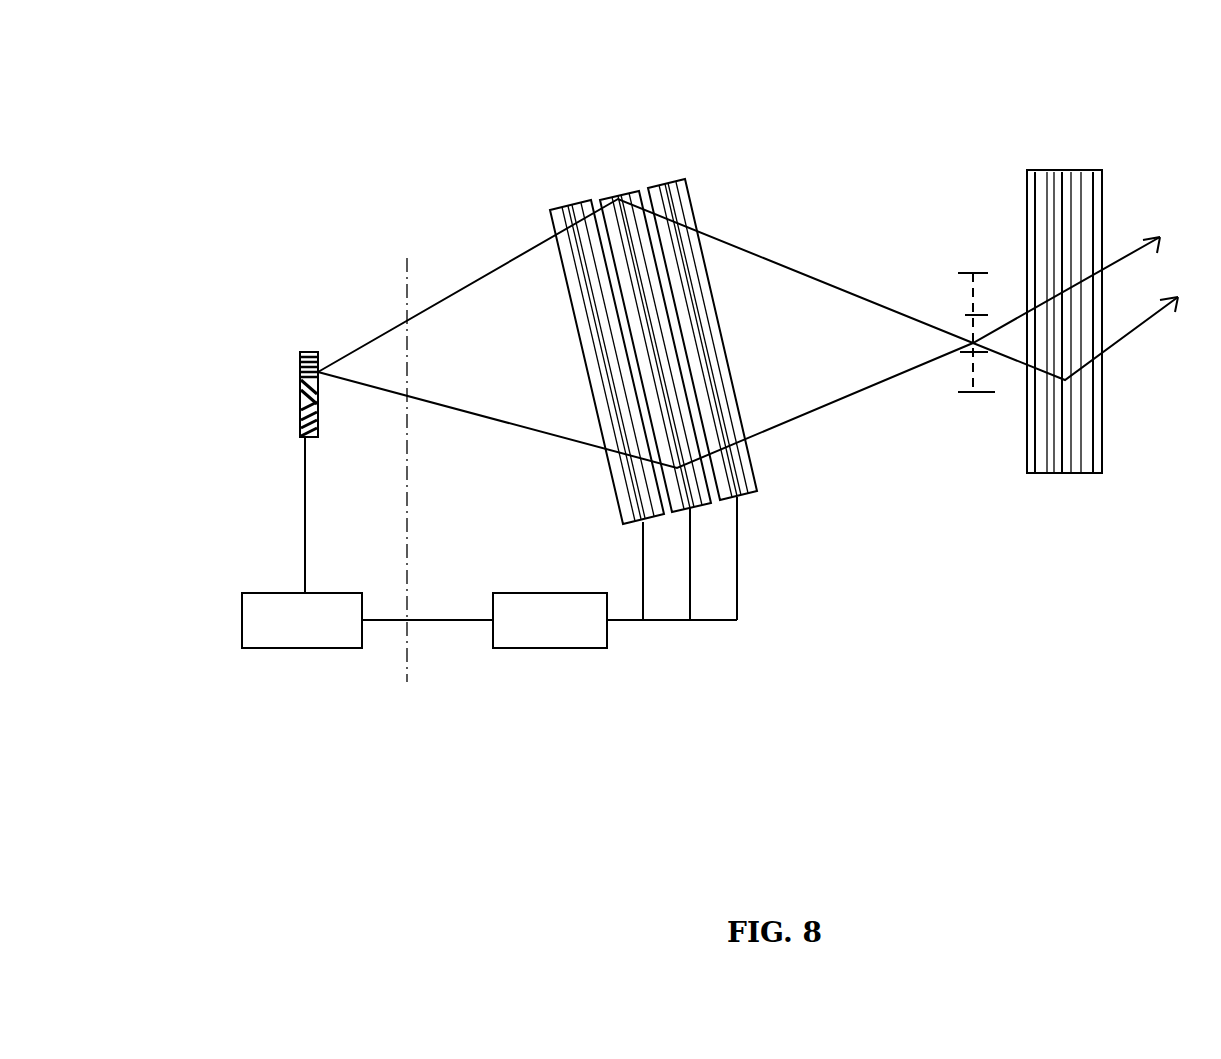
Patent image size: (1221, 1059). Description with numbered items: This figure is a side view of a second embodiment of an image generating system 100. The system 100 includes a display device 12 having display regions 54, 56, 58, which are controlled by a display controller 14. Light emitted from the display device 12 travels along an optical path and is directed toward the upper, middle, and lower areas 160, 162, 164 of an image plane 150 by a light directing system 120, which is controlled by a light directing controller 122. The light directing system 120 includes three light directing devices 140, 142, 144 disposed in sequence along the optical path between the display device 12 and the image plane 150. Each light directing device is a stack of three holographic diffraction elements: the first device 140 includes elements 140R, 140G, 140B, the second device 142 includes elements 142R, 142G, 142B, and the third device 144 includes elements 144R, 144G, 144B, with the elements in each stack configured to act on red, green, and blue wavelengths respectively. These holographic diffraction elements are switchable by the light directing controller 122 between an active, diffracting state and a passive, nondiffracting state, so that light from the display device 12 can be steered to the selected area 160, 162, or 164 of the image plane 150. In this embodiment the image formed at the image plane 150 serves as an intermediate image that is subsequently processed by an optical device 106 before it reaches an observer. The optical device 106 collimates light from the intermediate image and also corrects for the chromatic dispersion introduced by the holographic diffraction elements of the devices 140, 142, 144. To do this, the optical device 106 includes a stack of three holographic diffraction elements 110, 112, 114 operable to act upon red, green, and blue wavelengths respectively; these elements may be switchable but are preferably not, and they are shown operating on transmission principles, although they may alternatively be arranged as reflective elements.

The image generating system 100 is at (820, 122).
The display device 12 is at (312, 440).
The display region 54 is at (300, 366).
The display region 56 is at (300, 391).
The display region 58 is at (300, 424).
The display controller 14 is at (252, 636).
The light directing controller 122 is at (557, 636).
The light directing system 120 is at (635, 327).
The light directing device 140 is at (568, 205).
The light directing device 142 is at (625, 195).
The light directing device 144 is at (680, 180).
The holographic diffraction element 140R is at (636, 522).
The holographic diffraction element 140G is at (650, 522).
The holographic diffraction element 140B is at (645, 522).
The holographic diffraction element 142R is at (690, 508).
The holographic diffraction element 142G is at (696, 508).
The holographic diffraction element 142B is at (735, 498).
The holographic diffraction element 144R is at (740, 498).
The holographic diffraction element 144G is at (745, 497).
The holographic diffraction element 144B is at (748, 495).
The image plane 150 is at (943, 318).
The upper area 160 is at (962, 290).
The middle area 162 is at (958, 338).
The lower area 164 is at (960, 388).
The optical device 106 is at (1108, 257).
The holographic diffraction element 110 is at (1035, 170).
The holographic diffraction element 112 is at (1072, 170).
The holographic diffraction element 114 is at (1103, 172).